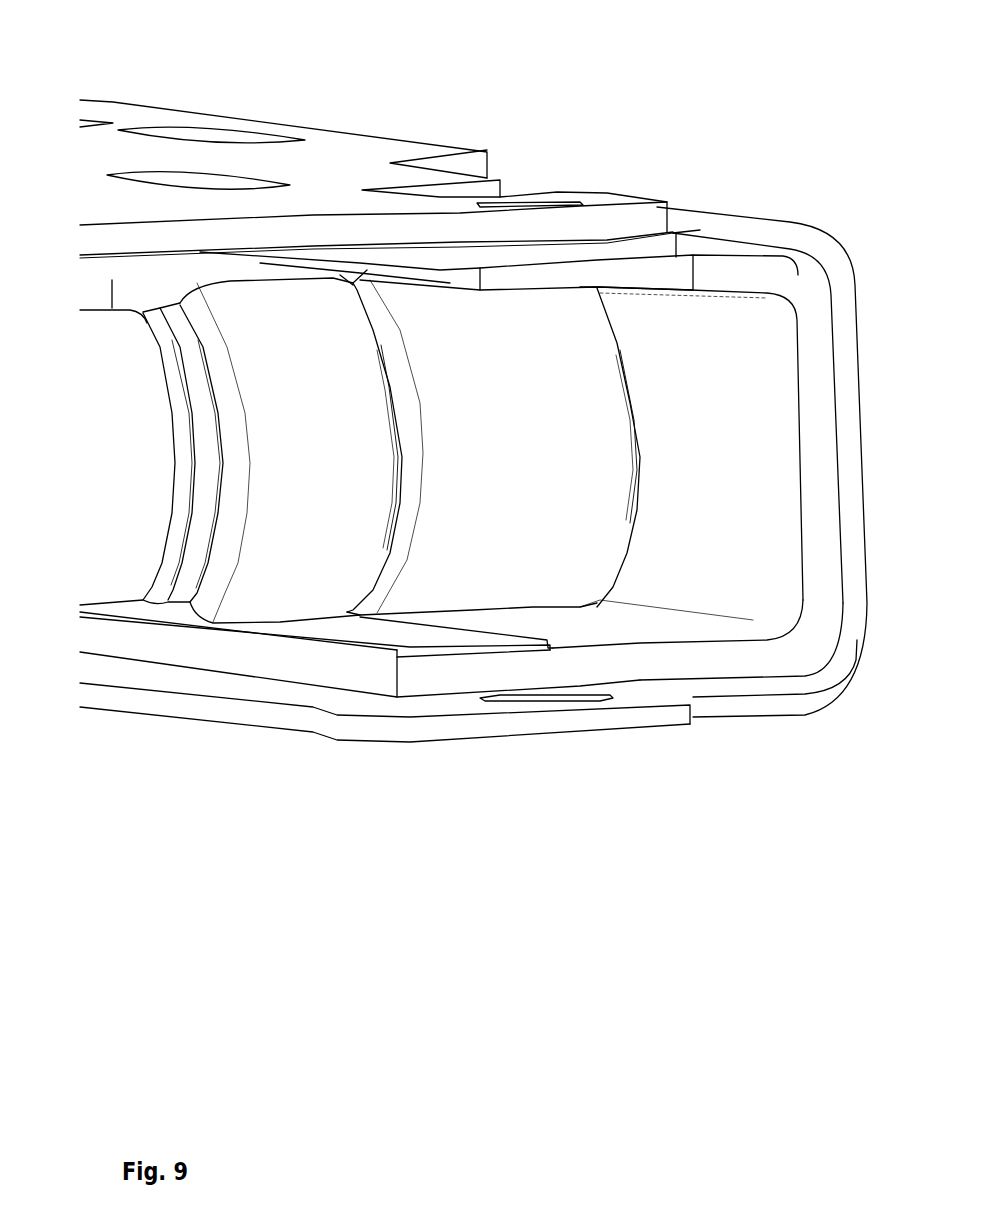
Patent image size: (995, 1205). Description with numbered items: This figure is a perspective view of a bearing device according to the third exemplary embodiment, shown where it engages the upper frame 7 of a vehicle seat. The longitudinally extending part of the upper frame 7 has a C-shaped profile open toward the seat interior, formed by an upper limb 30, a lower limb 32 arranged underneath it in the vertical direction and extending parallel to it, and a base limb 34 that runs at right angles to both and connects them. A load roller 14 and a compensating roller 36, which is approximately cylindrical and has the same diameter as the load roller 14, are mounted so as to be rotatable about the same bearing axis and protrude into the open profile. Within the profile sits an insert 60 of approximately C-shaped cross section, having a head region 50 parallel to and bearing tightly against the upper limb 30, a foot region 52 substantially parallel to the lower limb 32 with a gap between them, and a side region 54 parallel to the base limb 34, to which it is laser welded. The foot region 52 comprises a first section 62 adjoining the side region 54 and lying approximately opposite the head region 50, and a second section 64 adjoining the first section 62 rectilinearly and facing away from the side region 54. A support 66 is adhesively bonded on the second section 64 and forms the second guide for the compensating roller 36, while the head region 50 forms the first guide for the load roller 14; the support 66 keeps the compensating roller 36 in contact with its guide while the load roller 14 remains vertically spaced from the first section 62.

The upper frame 7 is at (512, 248).
The load roller 14 is at (487, 350).
The upper limb 30 is at (597, 250).
The lower limb 32 is at (707, 703).
The base limb 34 is at (845, 338).
The compensating roller 36 is at (285, 350).
The head region 50 is at (722, 265).
The foot region 52 is at (566, 663).
The side region 54 is at (814, 378).
The insert 60 is at (813, 632).
The first section 62 is at (710, 664).
The second section 64 is at (418, 680).
The support 66 is at (362, 632).